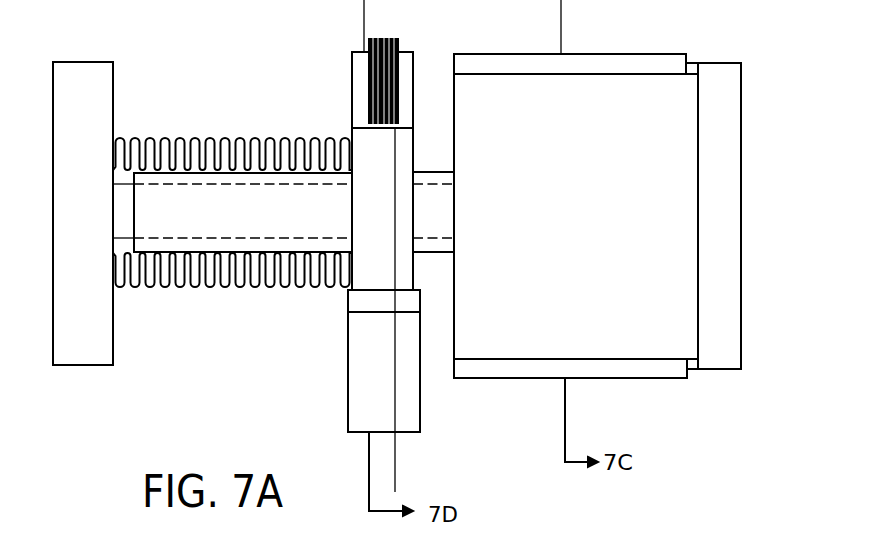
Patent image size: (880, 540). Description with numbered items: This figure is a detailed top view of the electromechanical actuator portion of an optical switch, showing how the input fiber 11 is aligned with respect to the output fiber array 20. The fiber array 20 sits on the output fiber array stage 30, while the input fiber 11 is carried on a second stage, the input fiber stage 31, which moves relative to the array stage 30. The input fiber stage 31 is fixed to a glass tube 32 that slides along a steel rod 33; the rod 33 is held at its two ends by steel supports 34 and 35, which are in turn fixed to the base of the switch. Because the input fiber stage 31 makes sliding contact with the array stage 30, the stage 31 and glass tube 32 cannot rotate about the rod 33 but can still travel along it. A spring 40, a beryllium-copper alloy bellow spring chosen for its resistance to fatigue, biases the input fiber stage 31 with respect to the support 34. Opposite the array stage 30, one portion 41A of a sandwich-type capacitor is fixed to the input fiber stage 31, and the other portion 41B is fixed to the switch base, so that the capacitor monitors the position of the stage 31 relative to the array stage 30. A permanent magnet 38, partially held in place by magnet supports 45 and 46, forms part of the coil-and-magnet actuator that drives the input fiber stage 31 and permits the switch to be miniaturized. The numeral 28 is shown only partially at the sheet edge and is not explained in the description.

The input fiber 11 is at (398, 403).
The fiber array 20 is at (397, 72).
The base 28 is at (592, 537).
The output fiber array stage 30 is at (358, 80).
The input fiber stage 31 is at (364, 278).
The glass tube 32 is at (160, 243).
The steel rod 33 is at (220, 225).
The steel support 34 is at (103, 88).
The steel support 35 is at (731, 155).
The permanent magnet 38 is at (686, 345).
The spring 40 is at (155, 146).
The capacitor portion 41A is at (360, 305).
The capacitor portion 41B is at (408, 427).
The magnet support 45 is at (620, 62).
The magnet support 46 is at (640, 378).